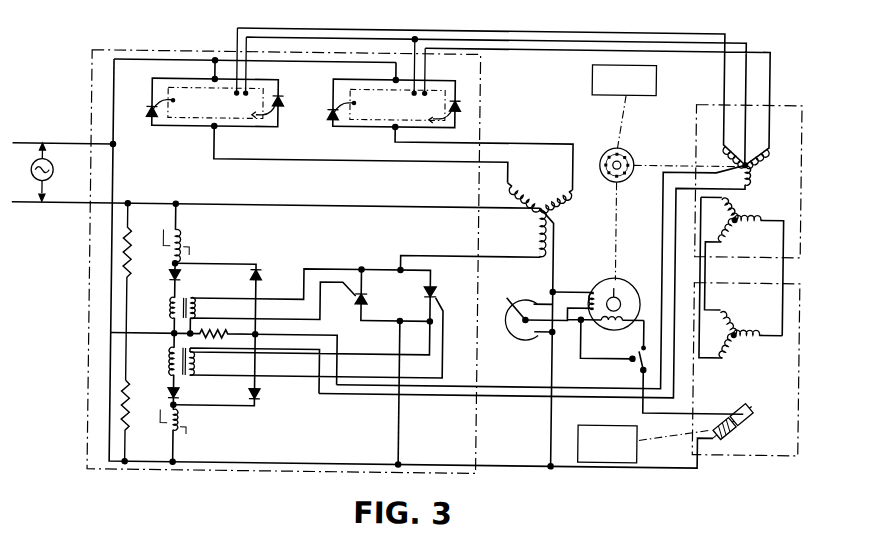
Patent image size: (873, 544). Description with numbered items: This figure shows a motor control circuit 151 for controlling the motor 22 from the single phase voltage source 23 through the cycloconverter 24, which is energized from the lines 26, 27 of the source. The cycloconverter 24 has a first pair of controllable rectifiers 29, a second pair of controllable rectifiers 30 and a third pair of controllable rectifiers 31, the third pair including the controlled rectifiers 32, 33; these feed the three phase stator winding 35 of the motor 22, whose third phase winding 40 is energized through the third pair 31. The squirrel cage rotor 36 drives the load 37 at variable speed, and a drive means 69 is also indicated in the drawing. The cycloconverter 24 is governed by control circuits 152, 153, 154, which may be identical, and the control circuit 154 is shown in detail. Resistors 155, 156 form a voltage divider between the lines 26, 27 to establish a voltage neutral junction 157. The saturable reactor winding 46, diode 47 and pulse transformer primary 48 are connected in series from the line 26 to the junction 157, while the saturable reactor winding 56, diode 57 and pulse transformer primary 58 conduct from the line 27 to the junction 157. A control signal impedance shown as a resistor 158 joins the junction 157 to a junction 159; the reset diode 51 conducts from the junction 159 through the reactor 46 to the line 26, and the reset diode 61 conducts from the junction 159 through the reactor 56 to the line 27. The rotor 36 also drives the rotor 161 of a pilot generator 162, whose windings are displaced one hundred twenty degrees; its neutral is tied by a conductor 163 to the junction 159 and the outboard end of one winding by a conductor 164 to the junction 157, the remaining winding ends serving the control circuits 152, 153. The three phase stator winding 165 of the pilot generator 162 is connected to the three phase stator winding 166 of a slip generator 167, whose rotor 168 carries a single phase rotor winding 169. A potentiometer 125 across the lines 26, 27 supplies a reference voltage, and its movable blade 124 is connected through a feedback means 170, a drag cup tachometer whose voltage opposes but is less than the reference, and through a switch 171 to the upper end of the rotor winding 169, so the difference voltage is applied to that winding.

The motor 22 is at (498, 324).
The voltage source 23 is at (52, 173).
The cycloconverter frequency changer 24 is at (117, 52).
The first line 26 is at (42, 145).
The second line 27 is at (68, 210).
The first pair of controllable rectifiers 29 is at (328, 105).
The second pair of controllable rectifiers 30 is at (451, 113).
The third pair of controllable rectifiers 31 is at (410, 349).
The controlled rectifier 32 is at (367, 302).
The controlled rectifier 33 is at (438, 292).
The three phase stator winding 35 is at (534, 233).
The squirrel cage rotor 36 is at (631, 152).
The load 37 is at (654, 88).
The third phase winding 40 is at (534, 246).
The saturable reactor winding 46 is at (184, 427).
The diode 47 is at (182, 397).
The pulse transformer primary 48 is at (169, 360).
The reset diode 51 is at (262, 396).
The saturable reactor winding 56 is at (184, 242).
The diode 57 is at (184, 280).
The pulse transformer primary 58 is at (171, 304).
The reset diode 61 is at (262, 281).
The drive means 69 is at (606, 423).
The movable blade 124 is at (533, 298).
The potentiometer 125 is at (526, 319).
The motor control circuit 151 is at (546, 82).
The control circuit 152 is at (194, 137).
The control circuit 153 is at (384, 133).
The control circuit 154 is at (293, 421).
The resistor 155 is at (134, 398).
The resistor 156 is at (129, 232).
The voltage neutral junction 157 is at (250, 301).
The control signal impedance 158 is at (240, 308).
The junction 159 is at (257, 321).
The rotor 161 is at (754, 170).
The pilot generator 162 is at (723, 218).
The conductor 163 is at (658, 292).
The conductor 164 is at (672, 246).
The three phase stator winding 165 is at (744, 212).
The three phase stator winding 166 is at (728, 315).
The slip generator 167 is at (712, 282).
The rotor 168 is at (749, 405).
The single phase rotor winding 169 is at (740, 424).
The feedback means 170 is at (596, 289).
The switch 171 is at (638, 365).